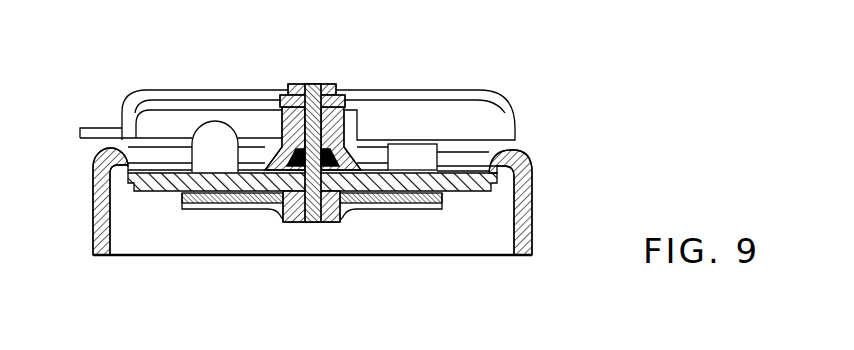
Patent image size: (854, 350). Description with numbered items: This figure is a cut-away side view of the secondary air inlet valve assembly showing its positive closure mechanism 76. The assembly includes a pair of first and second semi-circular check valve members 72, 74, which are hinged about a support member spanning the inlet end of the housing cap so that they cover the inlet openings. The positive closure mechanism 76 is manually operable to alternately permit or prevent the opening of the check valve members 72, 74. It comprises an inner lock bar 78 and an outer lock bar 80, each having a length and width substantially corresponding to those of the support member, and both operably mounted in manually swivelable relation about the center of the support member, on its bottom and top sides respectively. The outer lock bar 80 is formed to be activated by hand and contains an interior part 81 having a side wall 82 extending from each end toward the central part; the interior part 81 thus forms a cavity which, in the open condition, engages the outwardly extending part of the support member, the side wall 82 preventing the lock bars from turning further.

The first check valve member 72 is at (152, 193).
The second check valve member 74 is at (477, 193).
The positive closure mechanism 76 is at (325, 67).
The inner lock bar 78 is at (405, 208).
The outer lock bar 80 is at (200, 95).
The interior part 81 is at (260, 132).
The side wall 82 is at (137, 121).